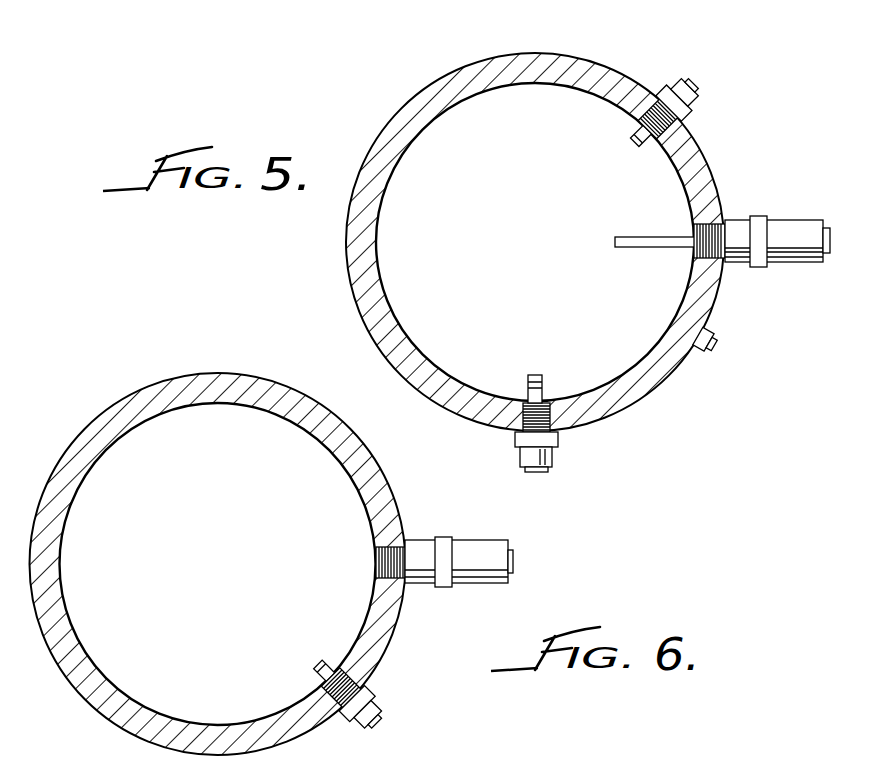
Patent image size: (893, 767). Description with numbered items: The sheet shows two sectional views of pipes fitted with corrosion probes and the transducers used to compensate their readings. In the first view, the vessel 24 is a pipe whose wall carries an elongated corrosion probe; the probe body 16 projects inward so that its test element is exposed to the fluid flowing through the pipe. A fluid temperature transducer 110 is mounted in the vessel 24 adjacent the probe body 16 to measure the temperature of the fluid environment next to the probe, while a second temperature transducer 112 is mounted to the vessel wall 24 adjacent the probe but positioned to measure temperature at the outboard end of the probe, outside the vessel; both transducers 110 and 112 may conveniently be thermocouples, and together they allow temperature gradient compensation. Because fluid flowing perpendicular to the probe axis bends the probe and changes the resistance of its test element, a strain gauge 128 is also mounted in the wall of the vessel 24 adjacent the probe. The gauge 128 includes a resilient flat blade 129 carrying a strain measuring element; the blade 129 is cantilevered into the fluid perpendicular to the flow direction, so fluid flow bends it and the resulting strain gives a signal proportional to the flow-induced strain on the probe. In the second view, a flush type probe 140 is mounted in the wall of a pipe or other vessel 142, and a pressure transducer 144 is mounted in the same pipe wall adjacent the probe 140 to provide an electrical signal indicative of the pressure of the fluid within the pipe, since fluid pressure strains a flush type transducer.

In FIG. 5, the vessel 24 is at (593, 62).
In FIG. 5, the probe body 16 is at (665, 235).
In FIG. 5, the fluid temperature transducer 110 is at (693, 105).
In FIG. 5, the second temperature transducer 112 is at (712, 333).
In FIG. 5, the strain gauge 128 is at (553, 456).
In FIG. 5, the resilient flat blade 129 is at (540, 385).
In FIG. 6, the vessel 142 is at (378, 463).
In FIG. 6, the flush type probe 140 is at (468, 540).
In FIG. 6, the pressure transducer 144 is at (372, 702).